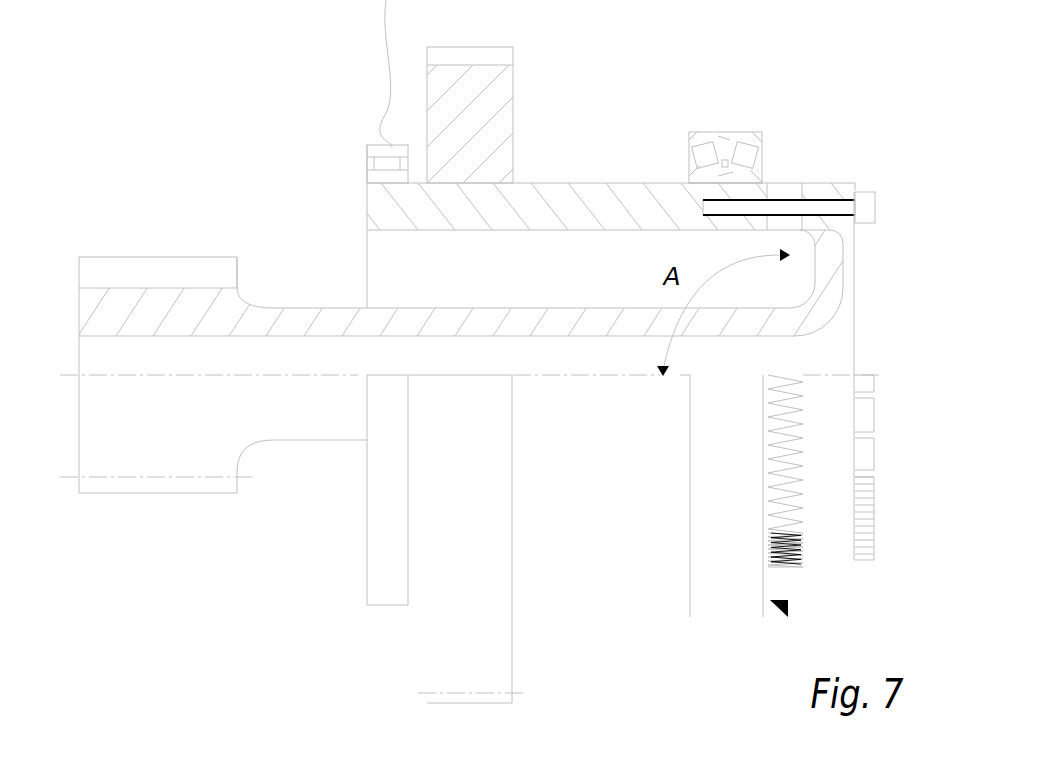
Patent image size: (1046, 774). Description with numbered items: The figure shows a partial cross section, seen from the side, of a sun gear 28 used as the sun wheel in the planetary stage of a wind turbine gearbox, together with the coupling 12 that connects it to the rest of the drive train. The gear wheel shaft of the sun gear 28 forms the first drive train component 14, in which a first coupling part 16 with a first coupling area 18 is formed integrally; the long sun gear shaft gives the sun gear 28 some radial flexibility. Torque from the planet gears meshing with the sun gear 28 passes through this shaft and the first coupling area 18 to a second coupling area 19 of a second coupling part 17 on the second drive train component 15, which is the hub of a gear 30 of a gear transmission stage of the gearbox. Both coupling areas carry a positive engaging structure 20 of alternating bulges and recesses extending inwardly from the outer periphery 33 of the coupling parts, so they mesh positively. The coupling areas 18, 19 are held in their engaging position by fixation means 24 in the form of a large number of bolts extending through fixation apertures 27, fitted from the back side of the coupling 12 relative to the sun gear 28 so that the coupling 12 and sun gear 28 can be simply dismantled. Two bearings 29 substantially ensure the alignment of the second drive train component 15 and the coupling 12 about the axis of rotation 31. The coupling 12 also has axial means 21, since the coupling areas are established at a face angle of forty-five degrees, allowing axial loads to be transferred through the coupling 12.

The coupling 12 is at (778, 610).
The first drive train component 14 is at (843, 320).
The second drive train component 15 is at (680, 197).
The first coupling part 16 is at (843, 192).
The second coupling part 17 is at (690, 185).
The first coupling area 18 is at (793, 190).
The second coupling area 19 is at (777, 183).
The first positive engaging structure 20 is at (785, 568).
The axial means 21 is at (800, 512).
The fixation means 24 is at (873, 220).
The fixation apertures 27 is at (808, 183).
The sun gear 28 is at (152, 270).
The bearings 29 is at (722, 133).
The gear 30 is at (492, 103).
The axis of rotation 31 is at (73, 370).
The outer periphery 33 is at (790, 565).